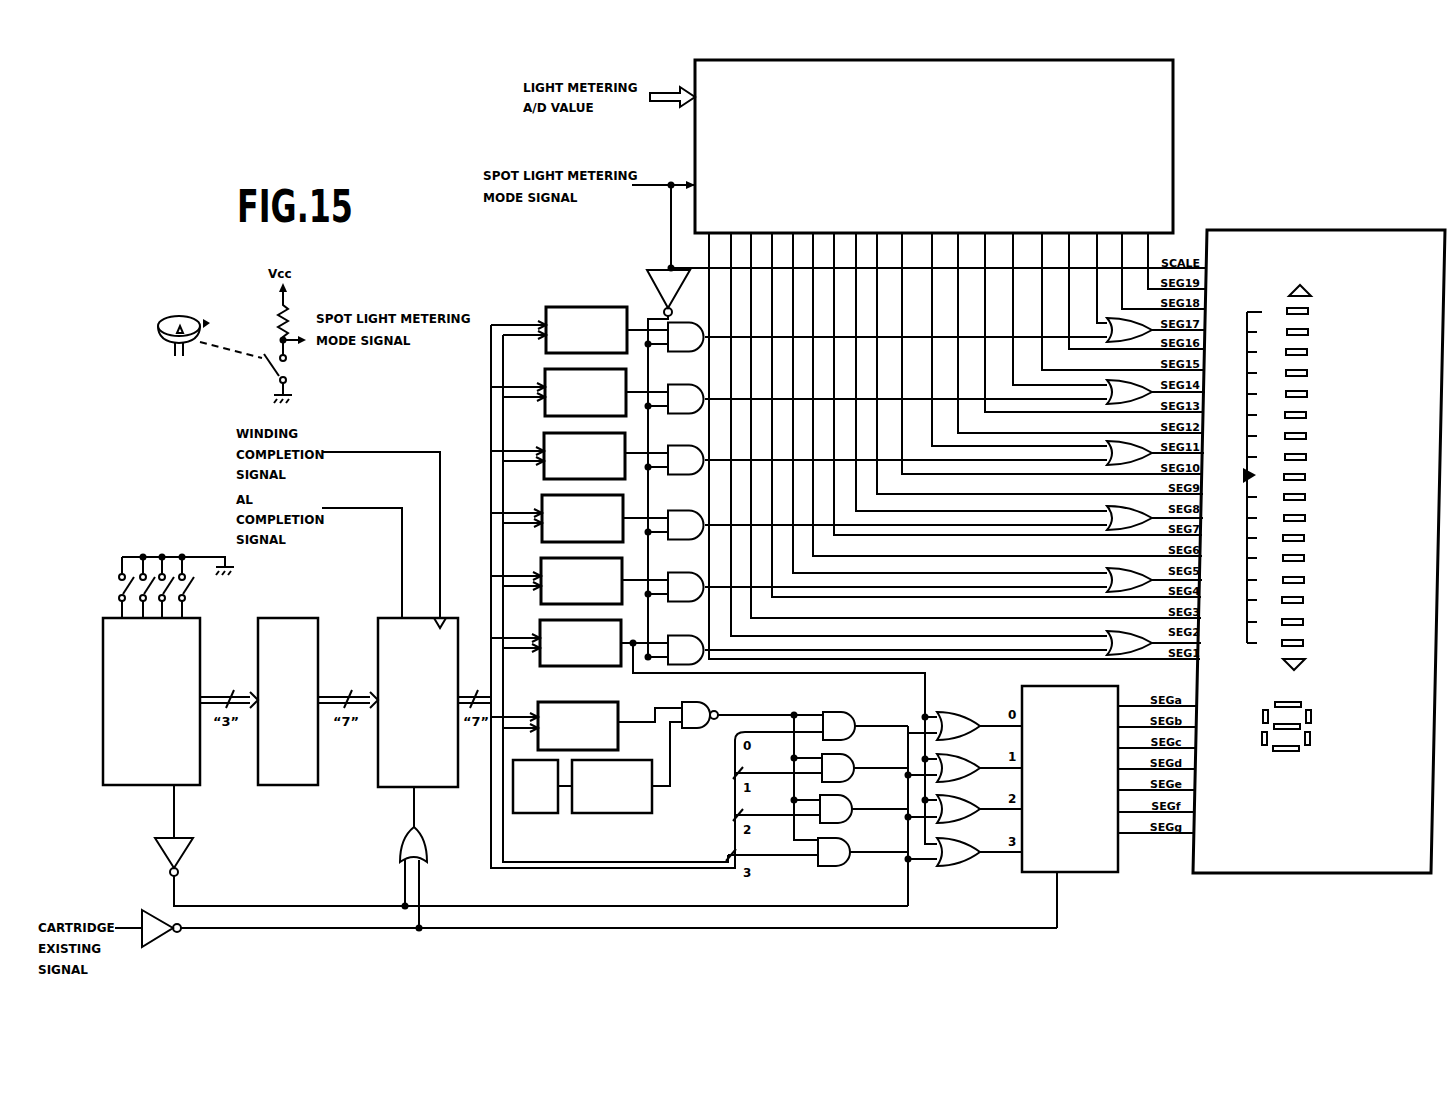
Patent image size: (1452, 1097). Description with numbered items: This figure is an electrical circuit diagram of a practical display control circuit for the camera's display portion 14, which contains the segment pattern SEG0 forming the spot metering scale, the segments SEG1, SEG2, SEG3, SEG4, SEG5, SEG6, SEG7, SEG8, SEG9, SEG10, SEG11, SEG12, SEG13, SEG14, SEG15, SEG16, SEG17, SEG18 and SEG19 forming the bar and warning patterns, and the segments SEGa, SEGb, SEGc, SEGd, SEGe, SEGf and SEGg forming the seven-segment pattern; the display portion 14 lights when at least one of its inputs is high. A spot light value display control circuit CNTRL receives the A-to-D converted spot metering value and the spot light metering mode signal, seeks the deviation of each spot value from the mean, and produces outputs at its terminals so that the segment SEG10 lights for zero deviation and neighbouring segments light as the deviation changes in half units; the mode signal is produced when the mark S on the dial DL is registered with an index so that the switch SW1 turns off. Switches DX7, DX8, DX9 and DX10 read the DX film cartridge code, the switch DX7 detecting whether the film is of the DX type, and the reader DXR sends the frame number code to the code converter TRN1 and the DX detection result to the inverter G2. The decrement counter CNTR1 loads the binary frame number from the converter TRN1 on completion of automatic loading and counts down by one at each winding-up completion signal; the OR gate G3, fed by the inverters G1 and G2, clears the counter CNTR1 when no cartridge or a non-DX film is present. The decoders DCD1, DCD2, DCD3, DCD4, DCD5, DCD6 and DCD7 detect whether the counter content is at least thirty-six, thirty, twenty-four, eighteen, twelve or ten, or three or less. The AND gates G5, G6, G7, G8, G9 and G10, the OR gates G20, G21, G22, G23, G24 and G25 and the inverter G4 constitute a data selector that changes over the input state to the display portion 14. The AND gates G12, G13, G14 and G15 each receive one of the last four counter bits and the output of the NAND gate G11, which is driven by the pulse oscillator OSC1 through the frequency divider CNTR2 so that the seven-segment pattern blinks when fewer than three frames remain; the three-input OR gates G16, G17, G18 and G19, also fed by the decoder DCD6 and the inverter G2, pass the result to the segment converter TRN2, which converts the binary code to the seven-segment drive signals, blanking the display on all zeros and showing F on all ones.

The spot light value display control circuit CNTRL is at (1173, 152).
The display portion 14 is at (1258, 875).
The decoder DCD1 is at (546, 307).
The decoder DCD2 is at (545, 380).
The decoder DCD3 is at (544, 450).
The decoder DCD4 is at (542, 512).
The decoder DCD5 is at (541, 574).
The decoder DCD6 is at (540, 636).
The decoder DCD7 is at (560, 702).
The inverter G1 is at (586, 928).
The inverter G2 is at (531, 845).
The OR gate G3 is at (413, 877).
The inverter G4 is at (668, 463).
The AND gate G5 is at (876, 337).
The AND gate G6 is at (876, 399).
The AND gate G7 is at (876, 460).
The AND gate G8 is at (876, 525).
The AND gate G9 is at (876, 587).
The AND gate G10 is at (876, 650).
The NAND gate G11 is at (752, 715).
The AND gate G12 is at (865, 726).
The AND gate G13 is at (865, 768).
The AND gate G14 is at (864, 809).
The AND gate G15 is at (863, 852).
The OR gate G16 is at (979, 726).
The OR gate G17 is at (979, 768).
The OR gate G18 is at (979, 809).
The OR gate G19 is at (979, 852).
The OR gate G20 is at (1156, 330).
The OR gate G21 is at (1156, 392).
The OR gate G22 is at (1155, 453).
The OR gate G23 is at (1155, 518).
The OR gate G24 is at (1154, 580).
The OR gate G25 is at (1154, 643).
The decrement counter CNTR1 is at (378, 770).
The frequency divider CNTR2 is at (597, 783).
The pulse oscillator OSC1 is at (535, 786).
The code converter TRN1 is at (283, 618).
The segment converter TRN2 is at (1105, 873).
The reader DXR is at (200, 652).
The switch DX7 is at (119, 576).
The switch DX8 is at (137, 568).
The switch DX9 is at (165, 574).
The switch DX10 is at (188, 574).
The dial DL is at (170, 317).
The switch SW1 is at (287, 370).
The segment pattern SEG0 is at (1249, 311).
The segment SEG1 is at (1305, 663).
The segment SEG2 is at (1303, 643).
The segment SEG3 is at (1303, 622).
The segment SEG4 is at (1303, 600).
The segment SEG5 is at (1304, 580).
The segment SEG6 is at (1304, 558).
The segment SEG7 is at (1304, 538).
The segment SEG8 is at (1305, 518).
The segment SEG9 is at (1305, 497).
The segment SEG10 is at (1305, 477).
The segment SEG11 is at (1306, 457).
The segment SEG12 is at (1306, 436).
The segment SEG13 is at (1306, 415).
The segment SEG14 is at (1307, 394).
The segment SEG15 is at (1307, 373).
The segment SEG16 is at (1307, 352).
The segment SEG17 is at (1308, 332).
The segment SEG18 is at (1308, 311).
The segment SEG19 is at (1311, 292).
The segment SEGa is at (1301, 703).
The segment SEGb is at (1311, 717).
The segment SEGc is at (1310, 739).
The segment SEGd is at (1298, 751).
The segment SEGe is at (1262, 746).
The segment SEGf is at (1262, 717).
The segment SEGg is at (1274, 727).